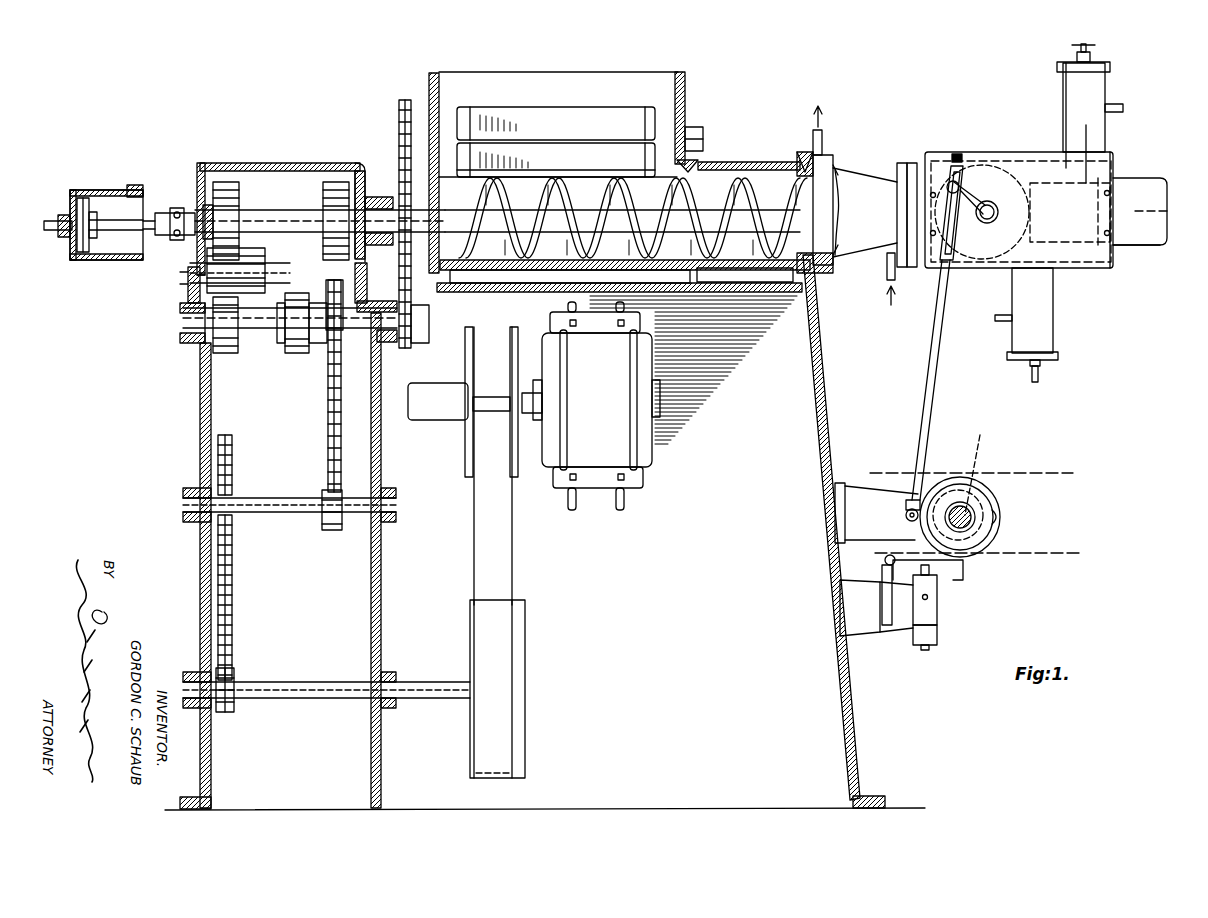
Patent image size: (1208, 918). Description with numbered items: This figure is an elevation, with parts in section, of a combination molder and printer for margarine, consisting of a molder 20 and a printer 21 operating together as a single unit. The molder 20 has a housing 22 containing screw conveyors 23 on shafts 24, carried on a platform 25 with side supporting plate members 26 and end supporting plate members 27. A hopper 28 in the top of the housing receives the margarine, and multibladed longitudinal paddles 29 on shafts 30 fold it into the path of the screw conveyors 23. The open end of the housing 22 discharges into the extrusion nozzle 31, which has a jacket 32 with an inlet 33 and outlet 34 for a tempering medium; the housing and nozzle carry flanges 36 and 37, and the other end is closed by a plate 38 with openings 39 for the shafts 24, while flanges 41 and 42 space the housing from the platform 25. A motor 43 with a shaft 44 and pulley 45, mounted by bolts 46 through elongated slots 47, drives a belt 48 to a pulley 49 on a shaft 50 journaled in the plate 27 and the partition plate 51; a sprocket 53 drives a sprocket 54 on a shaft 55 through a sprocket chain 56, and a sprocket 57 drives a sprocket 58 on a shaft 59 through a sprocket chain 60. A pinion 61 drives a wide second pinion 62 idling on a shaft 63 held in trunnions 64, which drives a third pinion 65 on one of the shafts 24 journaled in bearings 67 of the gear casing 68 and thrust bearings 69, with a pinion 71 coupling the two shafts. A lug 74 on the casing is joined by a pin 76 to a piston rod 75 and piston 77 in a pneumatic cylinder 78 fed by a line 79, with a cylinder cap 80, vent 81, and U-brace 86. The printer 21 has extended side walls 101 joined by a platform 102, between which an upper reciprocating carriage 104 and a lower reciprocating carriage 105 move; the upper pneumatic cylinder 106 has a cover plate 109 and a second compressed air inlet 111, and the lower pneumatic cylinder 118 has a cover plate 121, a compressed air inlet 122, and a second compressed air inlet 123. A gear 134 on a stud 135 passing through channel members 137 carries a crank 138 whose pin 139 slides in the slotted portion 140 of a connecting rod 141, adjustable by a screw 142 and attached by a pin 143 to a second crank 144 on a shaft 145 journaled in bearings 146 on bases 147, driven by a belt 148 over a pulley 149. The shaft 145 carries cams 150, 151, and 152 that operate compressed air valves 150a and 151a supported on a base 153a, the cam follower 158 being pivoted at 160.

The molder 20 is at (722, 142).
The printer 21 is at (1042, 130).
The housing 22 is at (752, 162).
The screw conveyors 23 is at (626, 218).
The shafts 24 is at (760, 215).
The platform 25 is at (748, 300).
The side supporting plate members 26 is at (820, 390).
The end supporting plate members 27 is at (200, 447).
The hopper 28 is at (686, 85).
The multibladed longitudinal paddles 29 is at (590, 110).
The shafts 30 is at (700, 130).
The extrusion nozzle 31 is at (858, 178).
The jacket 32 is at (826, 273).
The inlet 33 is at (886, 275).
The outlet 34 is at (825, 155).
The flange 36 is at (800, 152).
The flange 37 is at (814, 128).
The plate 38 is at (439, 186).
The openings 39 is at (428, 193).
The flange 41 is at (450, 294).
The flange 42 is at (700, 162).
The motor 43 is at (608, 457).
The shaft 44 is at (525, 405).
The pulley 45 is at (520, 470).
The bolts 46 is at (620, 327).
The elongated slots 47 is at (626, 499).
The belt 48 is at (474, 543).
The pulley 49 is at (525, 640).
The shaft 50 is at (325, 692).
The partition plate 51 is at (381, 588).
The sprocket 53 is at (236, 678).
The sprocket 54 is at (233, 455).
The shaft 55 is at (275, 498).
The sprocket chain 56 is at (233, 612).
The sprocket 57 is at (330, 530).
The sprocket 58 is at (342, 335).
The shaft 59 is at (268, 330).
The sprocket chain 60 is at (328, 409).
The pinion 61 is at (228, 354).
The second pinion 62 is at (246, 262).
The shaft 63 is at (296, 275).
The trunnions 64 is at (188, 292).
The third pinion 65 is at (236, 210).
The bearings 67 is at (360, 163).
The gear casing 68 is at (312, 163).
The thrust bearings 69 is at (205, 208).
The pinion 71 is at (325, 192).
The lug or tongue extension 74 is at (180, 238).
The piston rod 75 is at (110, 220).
The pin 76 is at (170, 209).
The piston 77 is at (82, 260).
The pneumatic cylinder 78 is at (112, 260).
The line 79 is at (50, 232).
The cylinder cap 80 is at (136, 185).
The vent 81 is at (114, 205).
The U-brace 86 is at (64, 215).
The extended side walls 101 is at (1146, 178).
The platform or support 102 is at (1148, 246).
The upper reciprocating carriage 104 is at (1108, 92).
The lower reciprocating carriage 105 is at (1078, 323).
The pneumatic cylinder 106 is at (1070, 82).
The cover plate 109 is at (1063, 58).
The second compressed air inlet 111 is at (1124, 108).
The pneumatic cylinder 118 is at (1047, 347).
The cover plate 121 is at (1012, 360).
The compressed air inlet 122 is at (1040, 372).
The second compressed air inlet 123 is at (998, 314).
The gear 134 is at (1044, 224).
The stud 135 is at (989, 200).
The channel members 137 is at (1085, 262).
The crank 138 is at (968, 185).
The pin 139 is at (947, 187).
The slotted portion 140 is at (953, 218).
The connecting rod 141 is at (936, 345).
The screw 142 is at (956, 154).
The pin 143 is at (905, 515).
The second crank 144 is at (940, 500).
The shaft 145 is at (965, 505).
The bearings 146 is at (983, 462).
The bases 147 is at (842, 483).
The belt 148 is at (1065, 473).
The pulley 149 is at (1000, 553).
The cam 150 is at (1000, 527).
The compressed air valve 150a is at (930, 605).
The cam 151 is at (990, 494).
The compressed air valve 151a is at (930, 635).
The cam 152 is at (998, 508).
The base 153a is at (866, 636).
The cam follower 158 is at (955, 566).
The pivot 160 is at (885, 560).